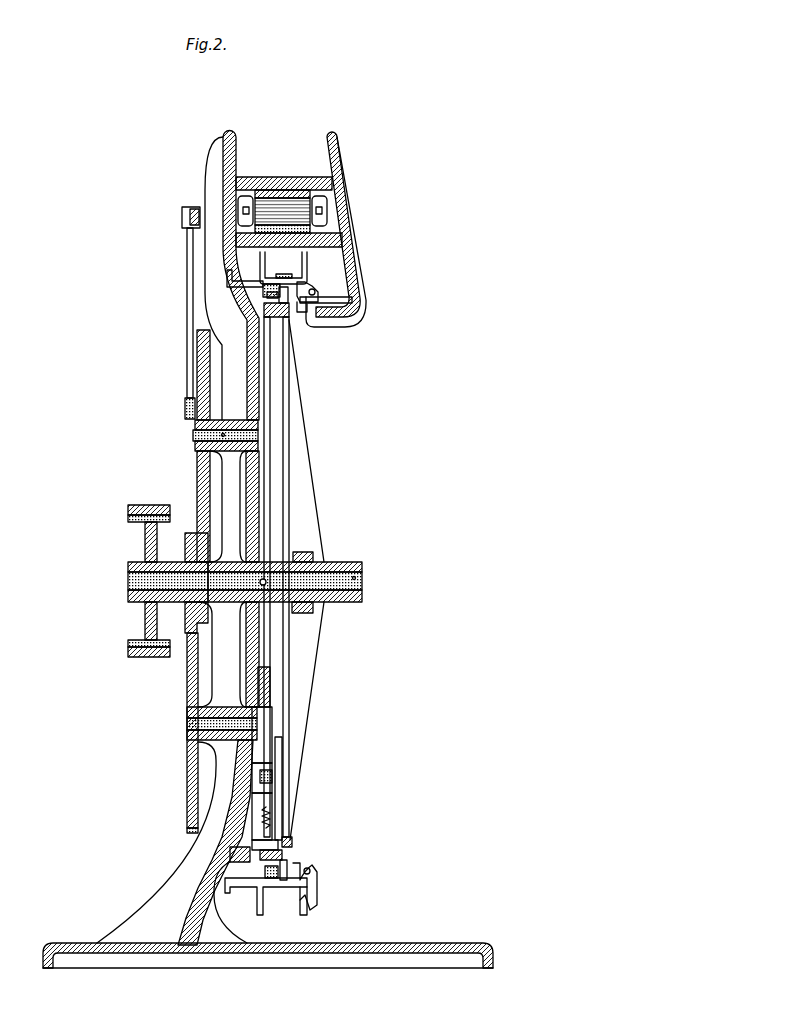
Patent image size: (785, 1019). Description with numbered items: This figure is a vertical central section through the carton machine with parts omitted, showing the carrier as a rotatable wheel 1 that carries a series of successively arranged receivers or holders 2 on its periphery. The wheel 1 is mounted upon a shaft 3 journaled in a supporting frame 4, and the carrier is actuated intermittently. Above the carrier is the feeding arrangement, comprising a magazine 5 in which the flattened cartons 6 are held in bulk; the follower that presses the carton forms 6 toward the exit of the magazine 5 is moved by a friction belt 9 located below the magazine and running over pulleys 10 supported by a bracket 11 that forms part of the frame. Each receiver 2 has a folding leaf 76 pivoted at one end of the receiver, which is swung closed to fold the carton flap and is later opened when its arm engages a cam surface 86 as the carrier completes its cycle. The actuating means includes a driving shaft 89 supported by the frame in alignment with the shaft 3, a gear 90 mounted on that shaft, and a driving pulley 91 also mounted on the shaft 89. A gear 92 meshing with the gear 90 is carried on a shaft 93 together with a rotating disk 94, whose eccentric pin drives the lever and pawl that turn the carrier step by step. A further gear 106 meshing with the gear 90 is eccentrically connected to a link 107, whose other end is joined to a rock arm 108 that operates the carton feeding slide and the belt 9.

The rotatable wheel 1 is at (291, 398).
The receivers or holders 2 is at (303, 262).
The shaft 3 is at (363, 578).
The supporting frame 4 is at (249, 519).
The magazine 5 is at (344, 161).
The flattened cartons 6 is at (328, 140).
The friction belt 9 is at (279, 187).
The pulleys 10 is at (297, 208).
The bracket 11 is at (353, 259).
The folding leaf 76 is at (341, 296).
The cam surface 86 is at (301, 309).
The driving shaft 89 is at (128, 582).
The gear 90 is at (187, 624).
The driving pulley 91 is at (140, 657).
The gear 92 is at (187, 795).
The shaft 93 is at (187, 729).
The rotating disk 94 is at (268, 755).
The gear 106 is at (200, 481).
The link 107 is at (186, 314).
The rock arm 108 is at (199, 206).